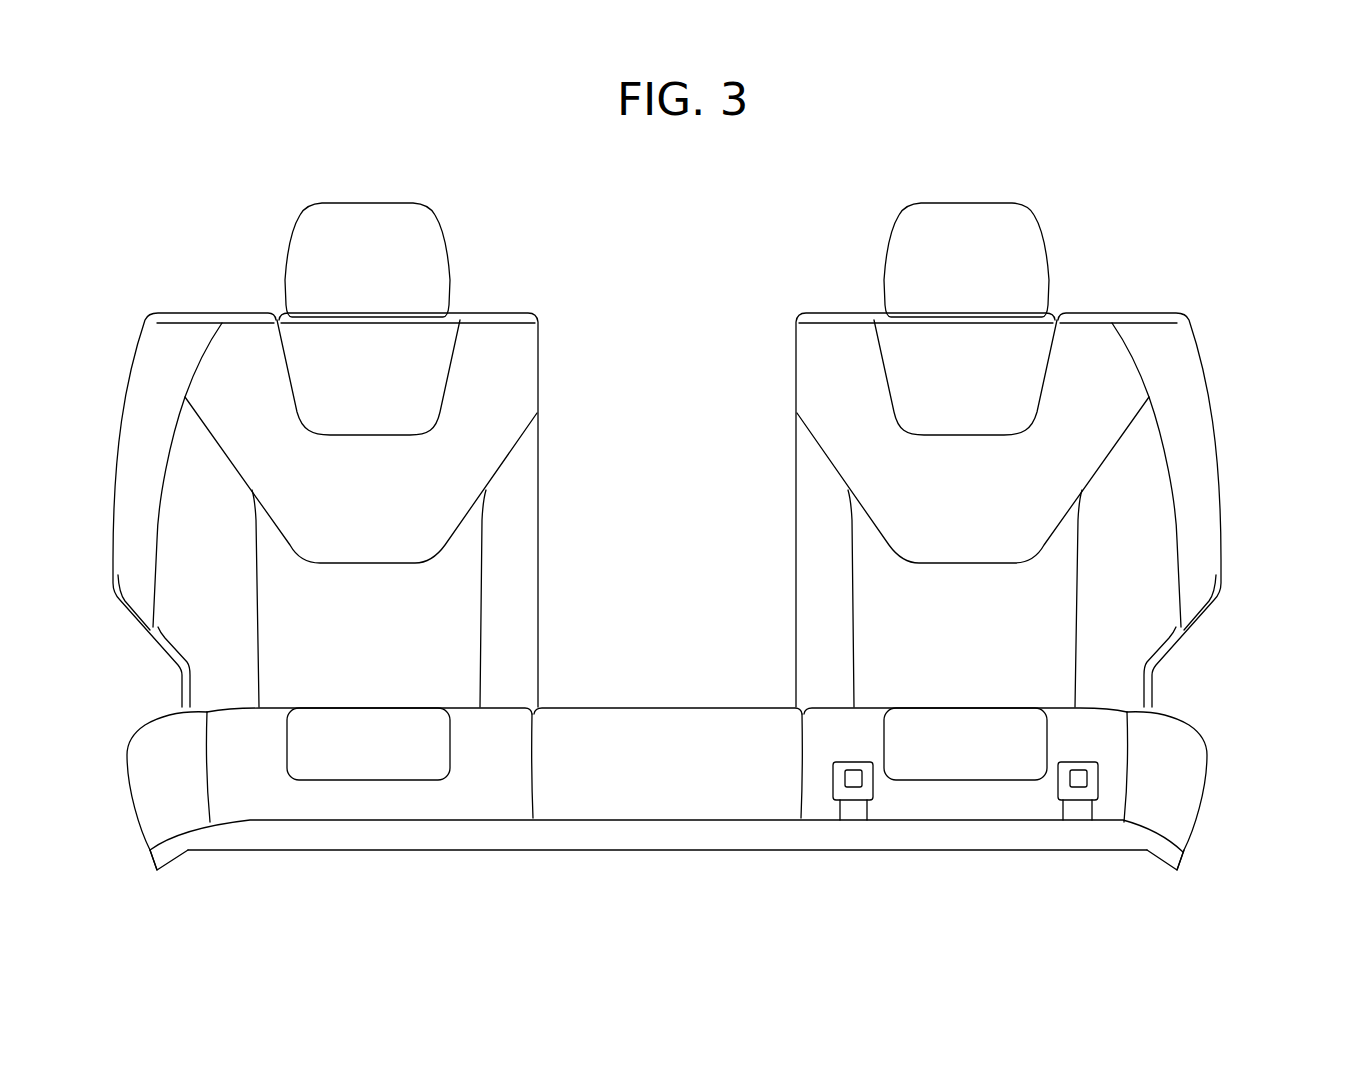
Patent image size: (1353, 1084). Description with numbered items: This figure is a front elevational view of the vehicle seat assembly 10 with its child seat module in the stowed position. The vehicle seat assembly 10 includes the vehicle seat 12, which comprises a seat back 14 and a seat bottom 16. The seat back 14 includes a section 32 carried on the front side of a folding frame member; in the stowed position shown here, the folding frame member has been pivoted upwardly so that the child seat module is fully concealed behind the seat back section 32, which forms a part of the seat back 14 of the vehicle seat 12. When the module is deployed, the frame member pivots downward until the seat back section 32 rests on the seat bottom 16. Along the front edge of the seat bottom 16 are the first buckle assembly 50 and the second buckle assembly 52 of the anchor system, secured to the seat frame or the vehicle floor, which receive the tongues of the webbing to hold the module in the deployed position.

The vehicle seat assembly 10 is at (1196, 247).
The vehicle seat 12 is at (828, 315).
The seat back 14 is at (655, 643).
The seat bottom 16 is at (1088, 733).
The seat back section 32 is at (1097, 417).
The first buckle assembly 50 is at (838, 793).
The second buckle assembly 52 is at (1090, 793).